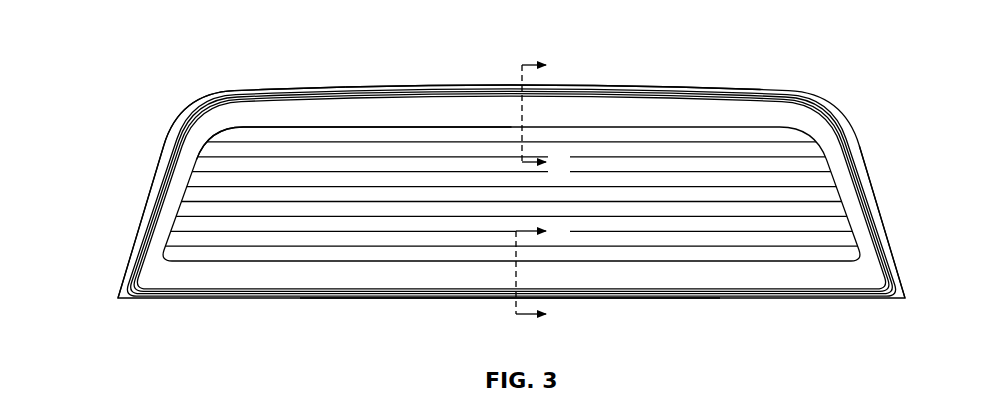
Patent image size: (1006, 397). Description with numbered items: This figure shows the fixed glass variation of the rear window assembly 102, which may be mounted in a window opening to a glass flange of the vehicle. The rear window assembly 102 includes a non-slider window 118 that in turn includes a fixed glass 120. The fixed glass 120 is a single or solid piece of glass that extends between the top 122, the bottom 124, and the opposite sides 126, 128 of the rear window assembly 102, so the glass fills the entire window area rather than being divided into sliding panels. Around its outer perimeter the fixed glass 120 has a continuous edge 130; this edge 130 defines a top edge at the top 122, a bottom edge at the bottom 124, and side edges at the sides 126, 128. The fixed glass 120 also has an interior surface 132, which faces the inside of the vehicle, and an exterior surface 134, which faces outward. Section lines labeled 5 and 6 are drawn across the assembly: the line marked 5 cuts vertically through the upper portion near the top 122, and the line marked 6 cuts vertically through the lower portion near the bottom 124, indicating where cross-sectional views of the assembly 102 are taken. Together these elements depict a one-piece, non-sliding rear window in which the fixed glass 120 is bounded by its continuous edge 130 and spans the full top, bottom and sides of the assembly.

The rear window assembly 102 is at (742, 58).
The non-slider window 118 is at (809, 163).
The fixed glass 120 is at (805, 213).
The top 122 is at (582, 84).
The bottom 124 is at (597, 300).
The side 126 is at (151, 193).
The side 128 is at (890, 238).
The continuous edge 130 is at (243, 91).
The interior surface 132 is at (318, 90).
The exterior surface 134 is at (362, 140).
The section line 5- 5 is at (543, 115).
The section line 6- 6 is at (541, 273).